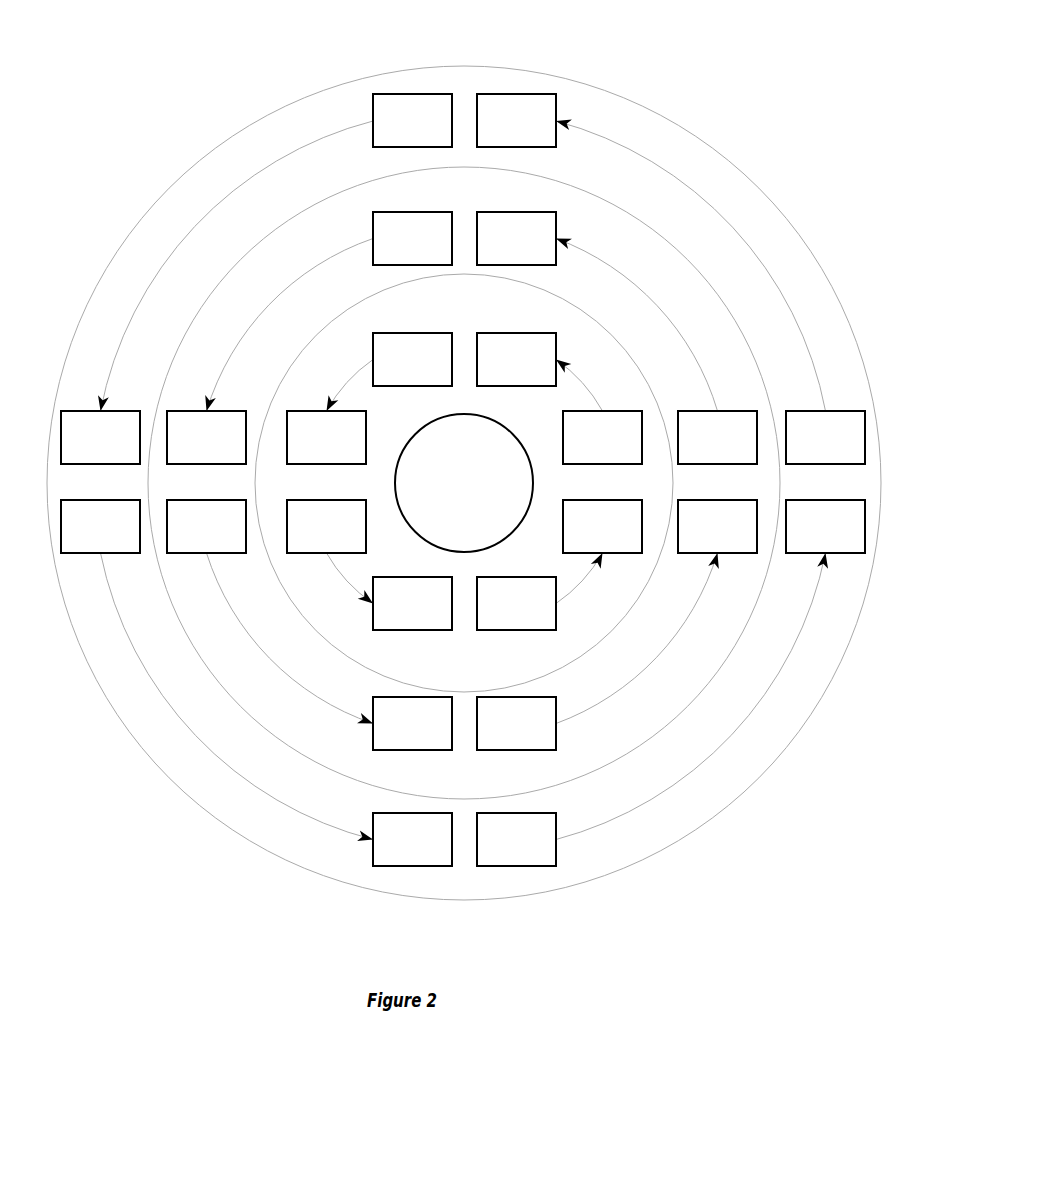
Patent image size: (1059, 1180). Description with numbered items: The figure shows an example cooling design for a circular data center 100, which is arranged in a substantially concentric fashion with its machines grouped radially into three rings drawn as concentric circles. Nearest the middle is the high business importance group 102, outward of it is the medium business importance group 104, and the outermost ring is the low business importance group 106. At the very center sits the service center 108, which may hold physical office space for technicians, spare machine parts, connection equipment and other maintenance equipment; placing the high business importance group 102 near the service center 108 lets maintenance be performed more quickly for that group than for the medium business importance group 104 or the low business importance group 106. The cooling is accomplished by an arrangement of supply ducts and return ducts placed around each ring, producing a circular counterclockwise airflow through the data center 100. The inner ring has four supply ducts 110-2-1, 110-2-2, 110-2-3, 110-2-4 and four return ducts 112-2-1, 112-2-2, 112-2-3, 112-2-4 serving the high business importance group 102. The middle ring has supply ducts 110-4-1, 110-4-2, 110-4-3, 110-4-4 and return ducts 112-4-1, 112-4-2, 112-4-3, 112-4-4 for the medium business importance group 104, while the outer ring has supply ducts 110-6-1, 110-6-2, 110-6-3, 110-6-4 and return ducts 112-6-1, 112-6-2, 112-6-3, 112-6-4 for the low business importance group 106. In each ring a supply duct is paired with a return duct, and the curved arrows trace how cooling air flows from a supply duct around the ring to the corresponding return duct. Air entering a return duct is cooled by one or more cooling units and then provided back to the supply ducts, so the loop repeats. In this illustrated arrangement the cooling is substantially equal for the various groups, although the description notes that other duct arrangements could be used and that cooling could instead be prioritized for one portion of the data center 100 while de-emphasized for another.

The data center 100 is at (730, 67).
The high business importance group 102 is at (451, 307).
The medium business importance group 104 is at (451, 196).
The low business importance group 106 is at (451, 91).
The service center 108 is at (446, 493).
The supply duct 110-2-1 is at (572, 448).
The supply duct 110-2-2 is at (382, 370).
The supply duct 110-2-3 is at (296, 537).
The supply duct 110-2-4 is at (486, 614).
The supply duct 110-4-1 is at (687, 448).
The supply duct 110-4-2 is at (382, 249).
The supply duct 110-4-3 is at (176, 537).
The supply duct 110-4-4 is at (486, 734).
The supply duct 110-6-1 is at (795, 448).
The supply duct 110-6-2 is at (382, 131).
The supply duct 110-6-3 is at (70, 537).
The supply duct 110-6-4 is at (486, 850).
The return duct 112-2-1 is at (572, 537).
The return duct 112-2-2 is at (486, 370).
The return duct 112-2-3 is at (296, 448).
The return duct 112-2-4 is at (382, 614).
The return duct 112-4-1 is at (687, 537).
The return duct 112-4-2 is at (486, 249).
The return duct 112-4-3 is at (176, 448).
The return duct 112-4-4 is at (382, 734).
The return duct 112-6-1 is at (795, 537).
The return duct 112-6-2 is at (486, 131).
The return duct 112-6-3 is at (70, 448).
The return duct 112-6-4 is at (382, 850).